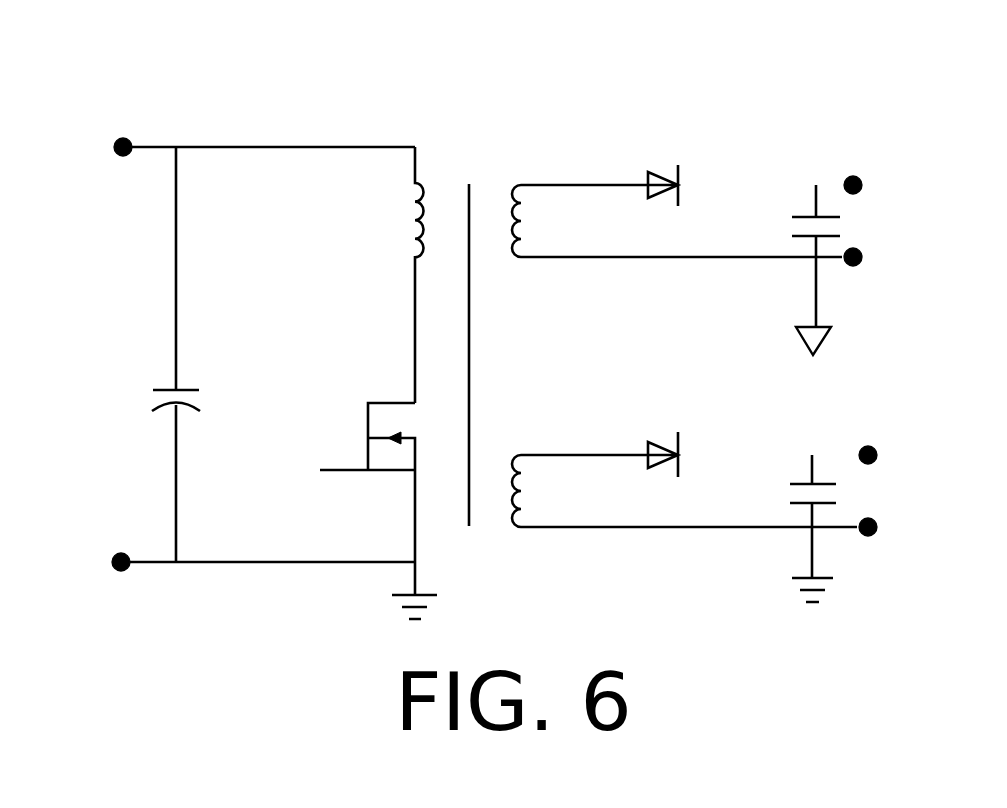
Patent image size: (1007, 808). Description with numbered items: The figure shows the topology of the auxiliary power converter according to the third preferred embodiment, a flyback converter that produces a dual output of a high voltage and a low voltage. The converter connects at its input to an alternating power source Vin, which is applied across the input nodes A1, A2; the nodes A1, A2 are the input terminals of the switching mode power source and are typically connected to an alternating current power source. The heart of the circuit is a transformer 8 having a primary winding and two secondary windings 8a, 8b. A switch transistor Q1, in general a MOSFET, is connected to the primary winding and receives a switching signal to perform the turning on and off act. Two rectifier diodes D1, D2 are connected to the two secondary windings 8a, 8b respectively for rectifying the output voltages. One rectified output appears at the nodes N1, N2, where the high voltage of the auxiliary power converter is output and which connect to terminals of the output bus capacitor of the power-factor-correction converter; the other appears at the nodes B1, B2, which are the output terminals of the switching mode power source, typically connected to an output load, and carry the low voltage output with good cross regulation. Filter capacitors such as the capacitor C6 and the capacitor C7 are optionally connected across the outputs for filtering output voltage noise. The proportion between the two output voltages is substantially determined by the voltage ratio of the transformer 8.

The transformer 8 is at (512, 130).
The secondary winding 8a is at (677, 221).
The secondary winding 8b is at (684, 491).
The switch transistor Q1 is at (363, 511).
The rectifier diode D1 is at (682, 158).
The rectifier diode D2 is at (686, 429).
The capacitor C6 is at (858, 256).
The second output capacitor C7 is at (866, 516).
The alternating power source Vin is at (127, 354).
The input terminal node A1 is at (227, 137).
The input terminal node A2 is at (226, 563).
The output node N1 is at (890, 152).
The output node N2 is at (848, 328).
The output terminal node B1 is at (907, 421).
The output terminal node B2 is at (850, 585).